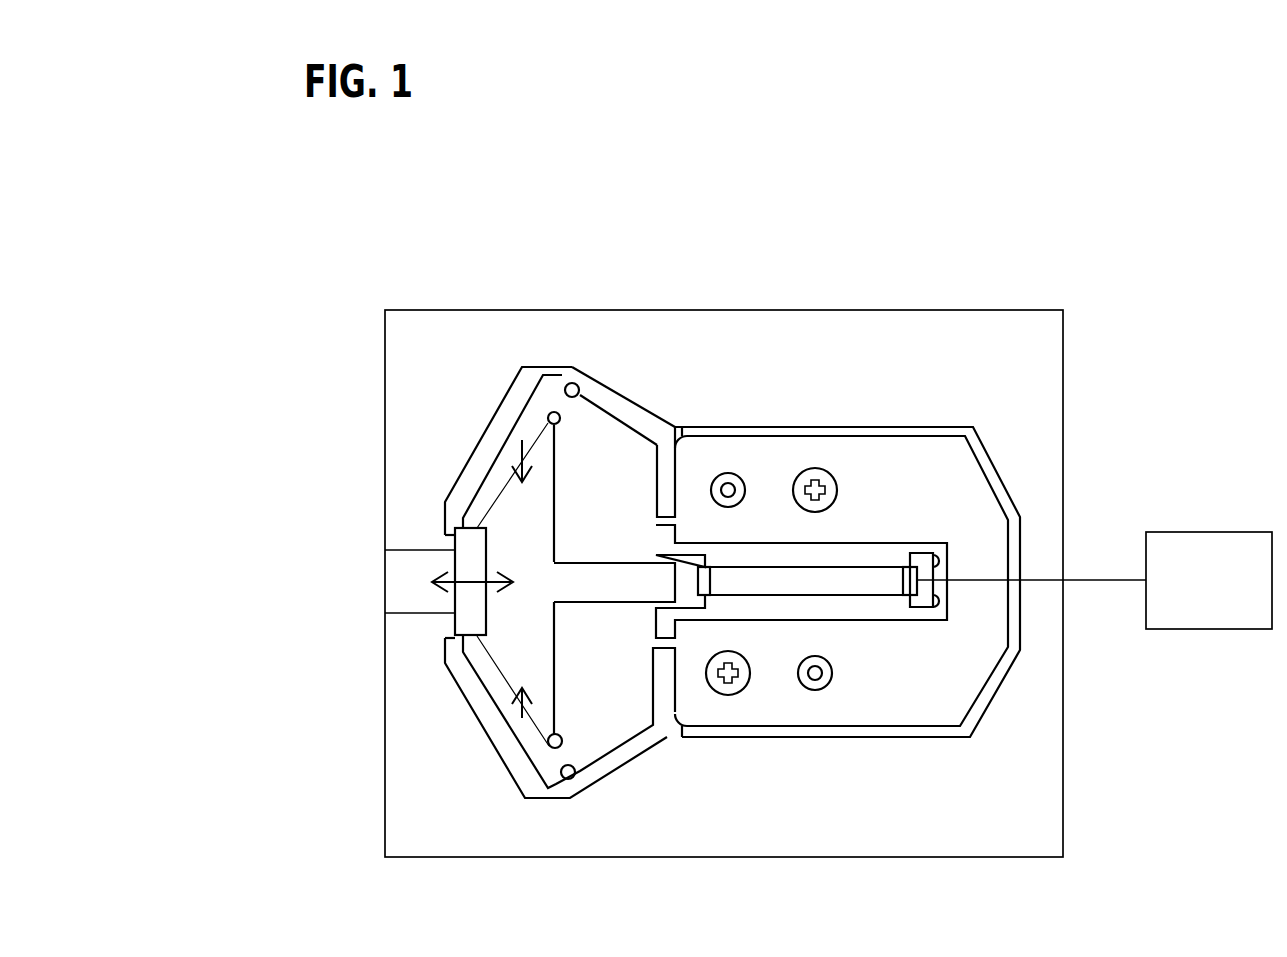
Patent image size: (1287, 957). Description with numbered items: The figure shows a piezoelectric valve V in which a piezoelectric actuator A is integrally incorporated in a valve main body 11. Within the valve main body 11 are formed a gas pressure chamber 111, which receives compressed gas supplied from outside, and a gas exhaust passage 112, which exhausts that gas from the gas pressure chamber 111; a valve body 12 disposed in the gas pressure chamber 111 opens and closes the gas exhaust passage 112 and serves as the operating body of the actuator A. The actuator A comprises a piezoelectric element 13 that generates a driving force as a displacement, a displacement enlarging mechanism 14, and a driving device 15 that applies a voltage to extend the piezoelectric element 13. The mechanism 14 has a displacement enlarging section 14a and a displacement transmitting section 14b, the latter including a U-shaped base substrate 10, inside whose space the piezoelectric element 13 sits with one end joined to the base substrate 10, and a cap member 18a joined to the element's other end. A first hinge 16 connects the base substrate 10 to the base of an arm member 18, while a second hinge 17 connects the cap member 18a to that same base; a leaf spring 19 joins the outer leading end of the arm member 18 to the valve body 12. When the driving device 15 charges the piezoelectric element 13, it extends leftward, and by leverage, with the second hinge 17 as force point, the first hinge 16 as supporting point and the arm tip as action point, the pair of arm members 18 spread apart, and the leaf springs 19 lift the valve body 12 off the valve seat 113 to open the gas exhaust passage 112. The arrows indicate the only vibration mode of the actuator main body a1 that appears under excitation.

The U-shaped base substrate 10 is at (943, 683).
The valve main body 11 is at (804, 311).
The valve body 12 is at (463, 618).
The piezoelectric element 13 is at (880, 580).
The displacement enlarging mechanism 14 is at (525, 535).
The displacement enlarging section 14a is at (638, 341).
The displacement transmitting section 14b is at (847, 578).
The driving device 15 is at (1200, 531).
The first hinge 16 is at (655, 503).
The second hinge 17 is at (663, 559).
The arm member 18 is at (585, 518).
The cap member 18a is at (683, 600).
The leaf spring 19 is at (478, 490).
The gas pressure chamber 111 is at (525, 668).
The gas exhaust passage 112 is at (410, 613).
The valve seat 113 is at (455, 530).
The piezoelectric actuator A is at (627, 417).
The actuator main body a1 is at (563, 367).
The piezoelectric valve V is at (503, 300).